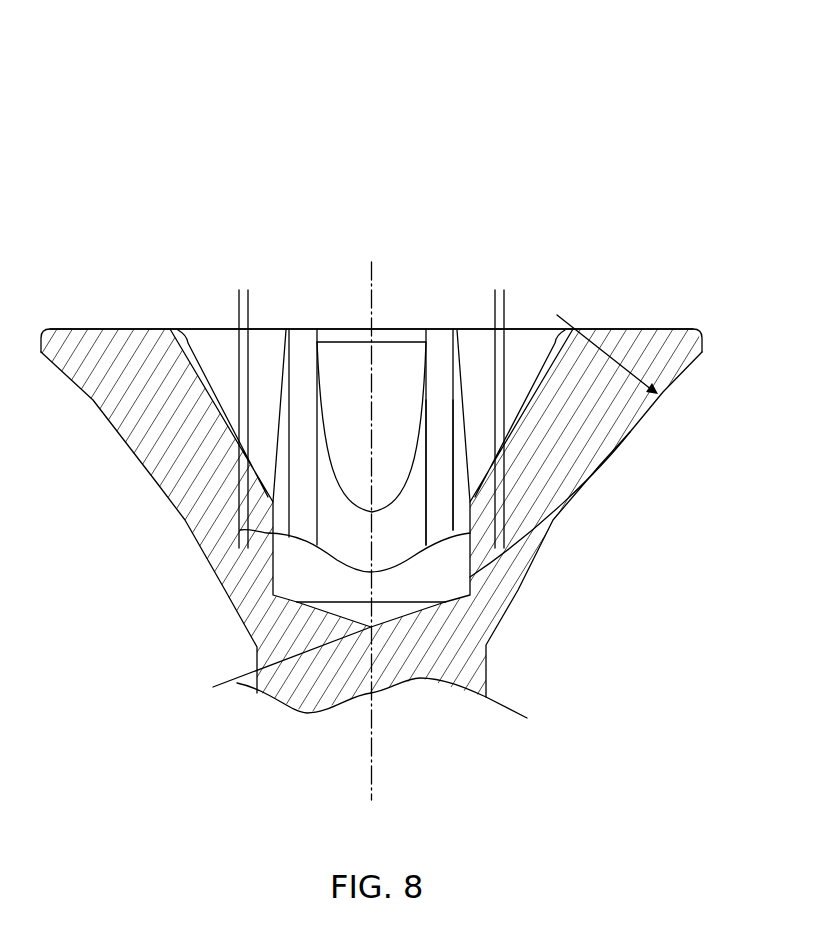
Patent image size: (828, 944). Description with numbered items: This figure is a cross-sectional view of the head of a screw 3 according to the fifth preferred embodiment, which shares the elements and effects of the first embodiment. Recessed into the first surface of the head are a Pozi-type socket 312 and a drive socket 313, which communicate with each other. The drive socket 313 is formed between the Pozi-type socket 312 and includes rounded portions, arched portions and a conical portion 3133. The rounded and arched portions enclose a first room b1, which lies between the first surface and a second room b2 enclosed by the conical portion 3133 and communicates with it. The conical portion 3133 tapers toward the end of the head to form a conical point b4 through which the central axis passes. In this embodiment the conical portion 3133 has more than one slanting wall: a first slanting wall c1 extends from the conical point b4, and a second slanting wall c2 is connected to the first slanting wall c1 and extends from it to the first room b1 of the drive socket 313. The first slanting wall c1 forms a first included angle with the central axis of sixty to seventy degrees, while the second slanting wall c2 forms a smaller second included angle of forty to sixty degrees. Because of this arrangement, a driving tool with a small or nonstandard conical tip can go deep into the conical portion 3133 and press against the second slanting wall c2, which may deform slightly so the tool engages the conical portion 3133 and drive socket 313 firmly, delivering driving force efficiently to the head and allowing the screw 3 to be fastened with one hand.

The screw 3 is at (168, 124).
The Pozi-type socket 312 is at (323, 322).
The drive socket 313 is at (233, 483).
The conical portion 3133 is at (268, 567).
The first room b1 is at (442, 493).
The second room b2 is at (470, 577).
The conical point b4 is at (372, 628).
The first slanting wall c1 is at (407, 615).
The second slanting wall c2 is at (429, 584).